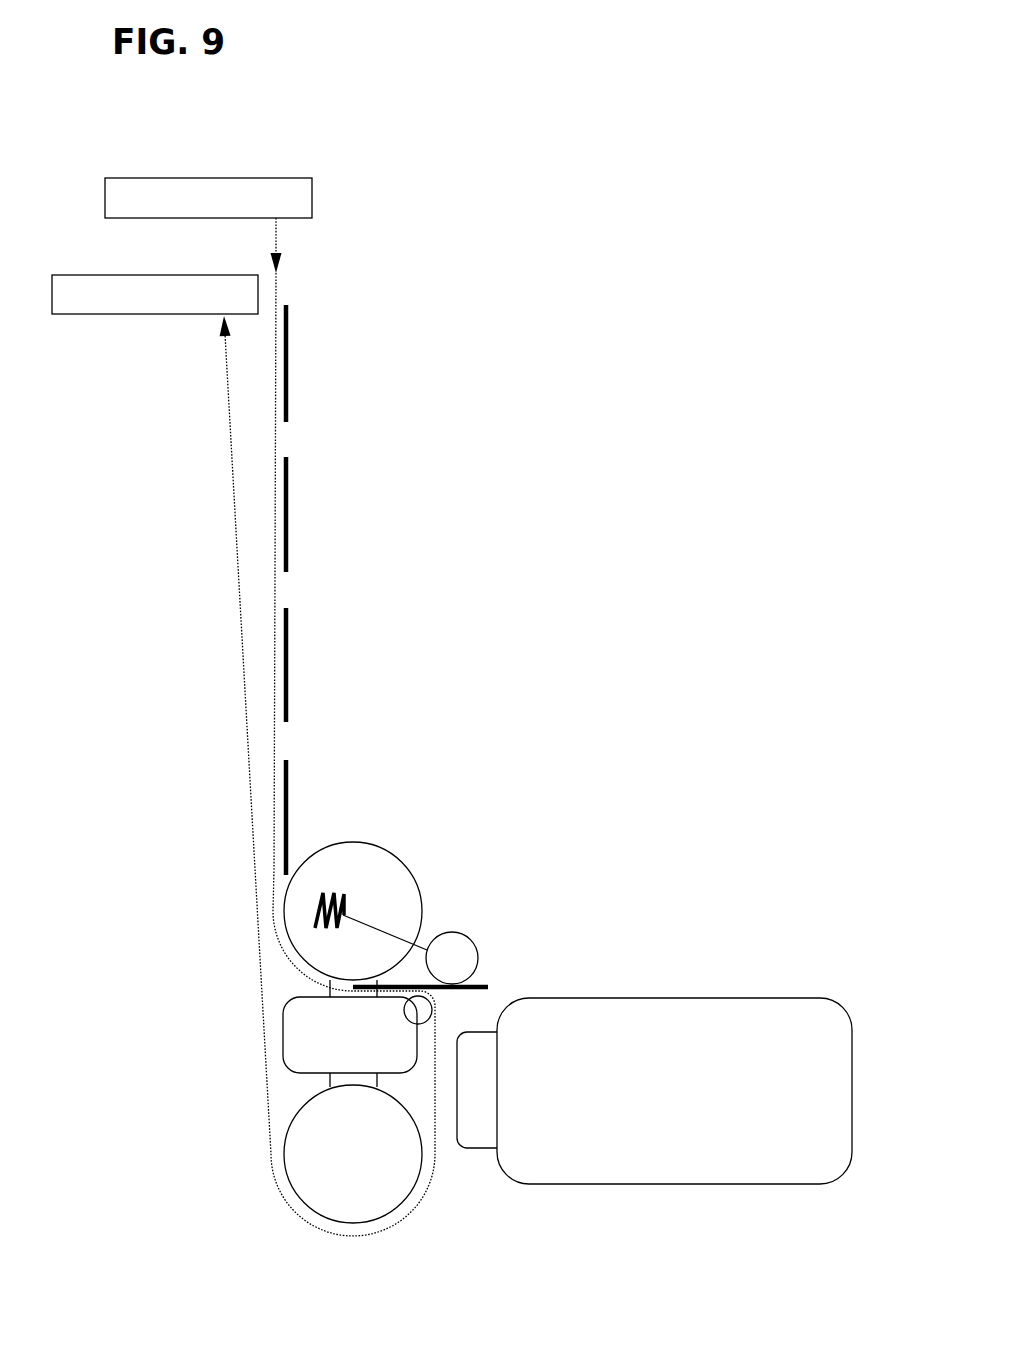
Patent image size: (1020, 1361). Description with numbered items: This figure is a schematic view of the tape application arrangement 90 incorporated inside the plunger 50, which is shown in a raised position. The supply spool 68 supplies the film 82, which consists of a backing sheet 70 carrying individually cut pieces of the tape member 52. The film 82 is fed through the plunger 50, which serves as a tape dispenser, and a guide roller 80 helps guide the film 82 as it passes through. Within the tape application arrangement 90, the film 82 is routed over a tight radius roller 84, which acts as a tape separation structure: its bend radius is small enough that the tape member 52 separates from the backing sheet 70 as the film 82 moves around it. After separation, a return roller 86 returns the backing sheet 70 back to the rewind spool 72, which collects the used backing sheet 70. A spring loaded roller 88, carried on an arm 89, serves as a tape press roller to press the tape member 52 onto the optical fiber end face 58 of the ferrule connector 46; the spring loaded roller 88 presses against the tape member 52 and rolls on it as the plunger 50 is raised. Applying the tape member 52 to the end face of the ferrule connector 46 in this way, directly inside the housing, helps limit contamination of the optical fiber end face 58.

The ferrule connector 46 is at (815, 998).
The plunger 50 is at (291, 1094).
The tape member 52 is at (288, 403).
The optical fiber end face 58 is at (458, 1132).
The supply spool 68 is at (146, 176).
The backing sheet 70 is at (278, 290).
The rewind spool 72 is at (83, 273).
The guide roller 80 is at (407, 862).
The film 82 is at (333, 292).
The tight radius roller 84 is at (432, 1010).
The return roller 86 is at (373, 1200).
The spring loaded roller 88 is at (475, 943).
The arm 89 is at (368, 923).
The tape application arrangement 90 is at (217, 918).